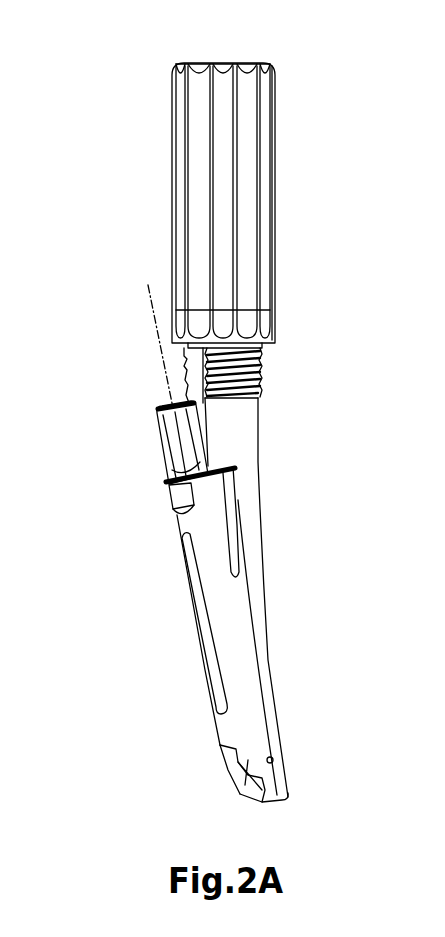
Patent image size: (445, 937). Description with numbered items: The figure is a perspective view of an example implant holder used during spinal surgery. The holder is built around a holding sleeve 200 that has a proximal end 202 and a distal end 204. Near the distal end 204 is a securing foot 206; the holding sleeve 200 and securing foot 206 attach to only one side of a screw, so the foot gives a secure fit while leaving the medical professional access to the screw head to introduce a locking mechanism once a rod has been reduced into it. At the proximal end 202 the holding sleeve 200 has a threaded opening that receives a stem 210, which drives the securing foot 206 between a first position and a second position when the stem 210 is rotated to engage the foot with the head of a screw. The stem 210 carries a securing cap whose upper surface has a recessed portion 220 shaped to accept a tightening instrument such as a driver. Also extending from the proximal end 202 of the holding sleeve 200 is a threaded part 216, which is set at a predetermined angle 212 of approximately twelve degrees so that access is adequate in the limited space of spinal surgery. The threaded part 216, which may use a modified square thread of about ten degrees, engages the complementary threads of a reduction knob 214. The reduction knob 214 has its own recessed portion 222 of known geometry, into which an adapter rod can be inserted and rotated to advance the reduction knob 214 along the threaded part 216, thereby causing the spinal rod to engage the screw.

The holding sleeve 200 is at (248, 448).
The proximal end 202 is at (167, 487).
The distal end 204 is at (290, 795).
The securing foot 206 is at (240, 791).
The stem 210 is at (158, 446).
The predetermined angle 212 is at (177, 362).
The reduction knob 214 is at (275, 140).
The threaded part 216 is at (262, 365).
The recessed portion 220 is at (160, 405).
The recessed portion 222 is at (205, 65).